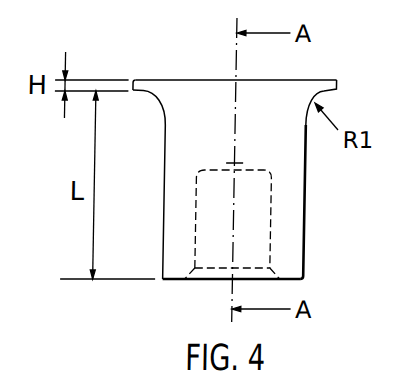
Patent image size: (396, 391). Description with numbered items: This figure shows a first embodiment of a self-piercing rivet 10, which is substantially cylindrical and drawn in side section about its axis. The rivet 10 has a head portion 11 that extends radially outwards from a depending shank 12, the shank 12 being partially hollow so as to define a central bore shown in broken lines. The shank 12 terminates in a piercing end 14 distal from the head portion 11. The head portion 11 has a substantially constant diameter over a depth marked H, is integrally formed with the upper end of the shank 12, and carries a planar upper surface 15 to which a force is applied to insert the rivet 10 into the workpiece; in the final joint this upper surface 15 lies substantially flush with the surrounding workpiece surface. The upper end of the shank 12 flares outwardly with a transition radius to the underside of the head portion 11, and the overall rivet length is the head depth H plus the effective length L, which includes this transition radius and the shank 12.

The self-piercing rivet 10 is at (168, 64).
The head portion 11 is at (328, 80).
The shank 12 is at (308, 168).
The piercing end 14 is at (185, 281).
The planar upper surface 15 is at (208, 79).